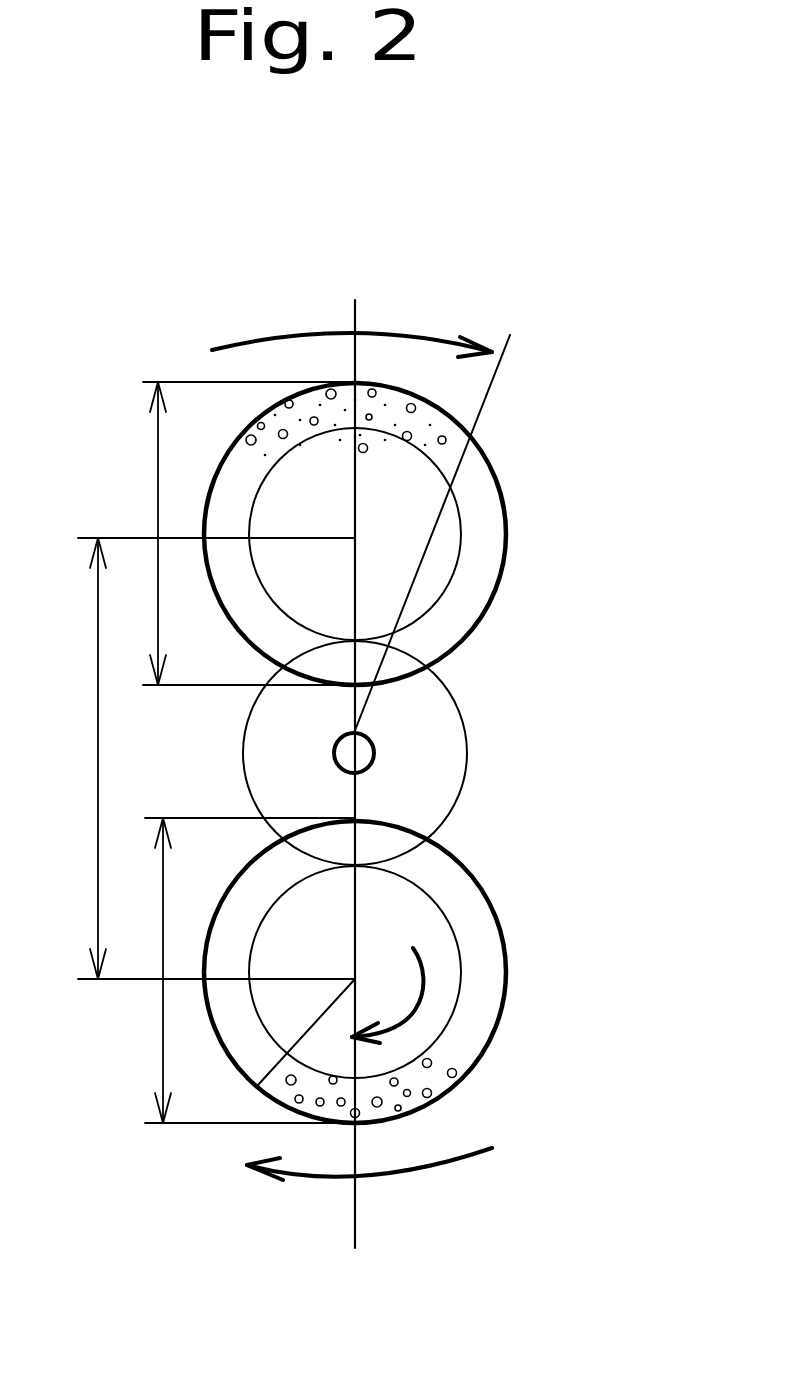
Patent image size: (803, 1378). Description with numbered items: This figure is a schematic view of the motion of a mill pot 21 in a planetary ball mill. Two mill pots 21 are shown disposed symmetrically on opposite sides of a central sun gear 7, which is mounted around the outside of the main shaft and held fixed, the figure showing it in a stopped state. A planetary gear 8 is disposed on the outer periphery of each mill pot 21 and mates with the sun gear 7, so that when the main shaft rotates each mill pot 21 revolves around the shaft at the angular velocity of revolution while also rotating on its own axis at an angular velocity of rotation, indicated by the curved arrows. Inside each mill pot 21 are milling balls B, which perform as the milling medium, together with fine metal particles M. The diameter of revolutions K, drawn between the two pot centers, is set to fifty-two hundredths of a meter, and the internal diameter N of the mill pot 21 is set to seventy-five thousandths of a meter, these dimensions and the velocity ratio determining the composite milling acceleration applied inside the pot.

The mill pot 21 is at (508, 512).
The planetary gear 8 is at (452, 574).
The sun gear 7 is at (468, 767).
The milling balls B is at (446, 436).
The fine metal particles M is at (365, 395).
The internal diameter of the mill pot N is at (134, 533).
The diameter of revolutions K is at (72, 758).